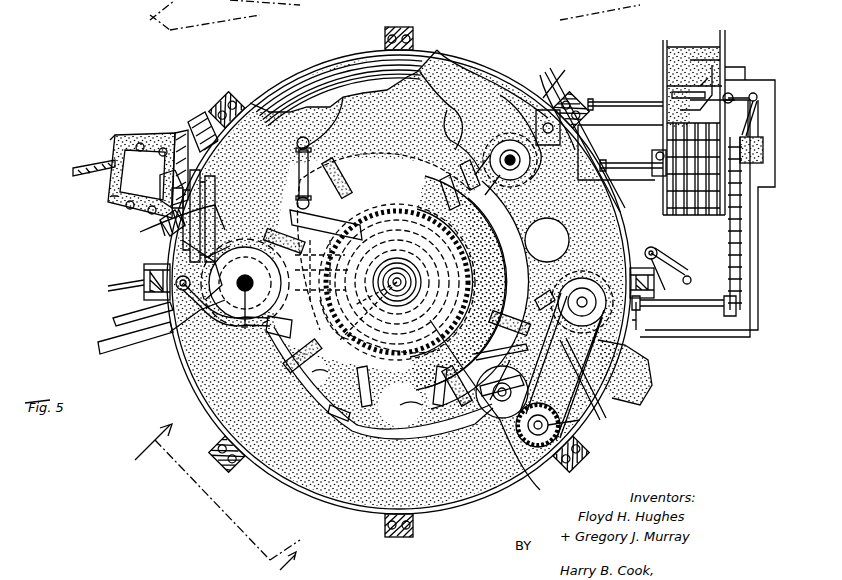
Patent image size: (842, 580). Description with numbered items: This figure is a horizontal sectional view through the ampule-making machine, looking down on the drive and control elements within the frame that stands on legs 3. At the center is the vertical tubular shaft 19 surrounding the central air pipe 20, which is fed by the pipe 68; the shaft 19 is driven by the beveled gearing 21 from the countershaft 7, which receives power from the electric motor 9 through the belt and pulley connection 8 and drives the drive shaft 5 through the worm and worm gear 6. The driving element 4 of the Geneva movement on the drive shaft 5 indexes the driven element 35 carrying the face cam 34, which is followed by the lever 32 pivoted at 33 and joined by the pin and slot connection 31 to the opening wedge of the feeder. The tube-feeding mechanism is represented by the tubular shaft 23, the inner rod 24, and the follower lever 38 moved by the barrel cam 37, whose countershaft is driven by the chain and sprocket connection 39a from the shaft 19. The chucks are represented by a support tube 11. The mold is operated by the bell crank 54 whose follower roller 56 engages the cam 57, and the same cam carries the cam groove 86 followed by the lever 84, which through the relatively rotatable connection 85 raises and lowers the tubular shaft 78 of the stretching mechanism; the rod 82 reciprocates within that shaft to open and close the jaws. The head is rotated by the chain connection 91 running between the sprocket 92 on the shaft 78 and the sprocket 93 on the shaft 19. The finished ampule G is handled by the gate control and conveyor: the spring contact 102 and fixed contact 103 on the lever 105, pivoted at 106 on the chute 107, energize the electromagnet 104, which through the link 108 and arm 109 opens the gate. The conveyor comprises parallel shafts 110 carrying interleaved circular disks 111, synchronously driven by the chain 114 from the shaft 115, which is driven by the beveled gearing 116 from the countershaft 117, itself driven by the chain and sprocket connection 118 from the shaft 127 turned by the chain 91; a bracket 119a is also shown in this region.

The legs 3 is at (413, 30).
The driving element 4 is at (168, 306).
The drive shaft 5 is at (222, 300).
The worm and worm gear 6 is at (304, 208).
The countershaft 7 is at (218, 222).
The belt and pulley connection 8 is at (165, 222).
The electric motor 9 is at (156, 162).
The support tube 11 is at (172, 335).
The vertical tubular shaft 19 is at (370, 320).
The pipe 20 is at (395, 262).
The beveled gearing 21 is at (325, 305).
The tubular shaft 23 is at (556, 100).
The rod 24 is at (540, 108).
The pin and slot connection 31 is at (508, 138).
The lever 32 is at (476, 155).
The pivot 33 is at (455, 170).
The face cam 34 is at (392, 149).
The driven element 35 is at (360, 130).
The barrel cam 37 is at (498, 94).
The follower lever 38 is at (575, 120).
The chain and sprocket connection 39a is at (448, 110).
The bell crank 54 is at (118, 293).
The follower roller 56 is at (240, 330).
The cam 57 is at (272, 340).
The pipe 68 is at (116, 345).
The vertical shaft 78 is at (512, 485).
The rod 82 is at (490, 418).
The lever 84 is at (452, 440).
The relatively rotatable connection 85 is at (430, 360).
The cam groove 86 is at (215, 322).
The chain connection 91 is at (560, 300).
The sprocket 92 is at (367, 398).
The sprocket 93 is at (410, 350).
The spring contact 102 is at (680, 86).
The fixed contact 103 is at (685, 70).
The electromagnet 104 is at (752, 170).
The lever 105 is at (757, 75).
The pivot 106 is at (730, 60).
The chute 107 is at (678, 45).
The link 108 is at (740, 135).
The arm 109 is at (660, 306).
The parallel shafts 110 is at (650, 166).
The circular disks 111 is at (667, 128).
The chain 114 is at (742, 270).
The shaft 115 is at (720, 312).
The beveled gearing 116 is at (650, 248).
The countershaft 117 is at (556, 322).
The chain and sprocket connection 118 is at (598, 398).
The bracket 119a is at (632, 382).
The shaft 127 is at (560, 428).
The ampule G is at (672, 95).